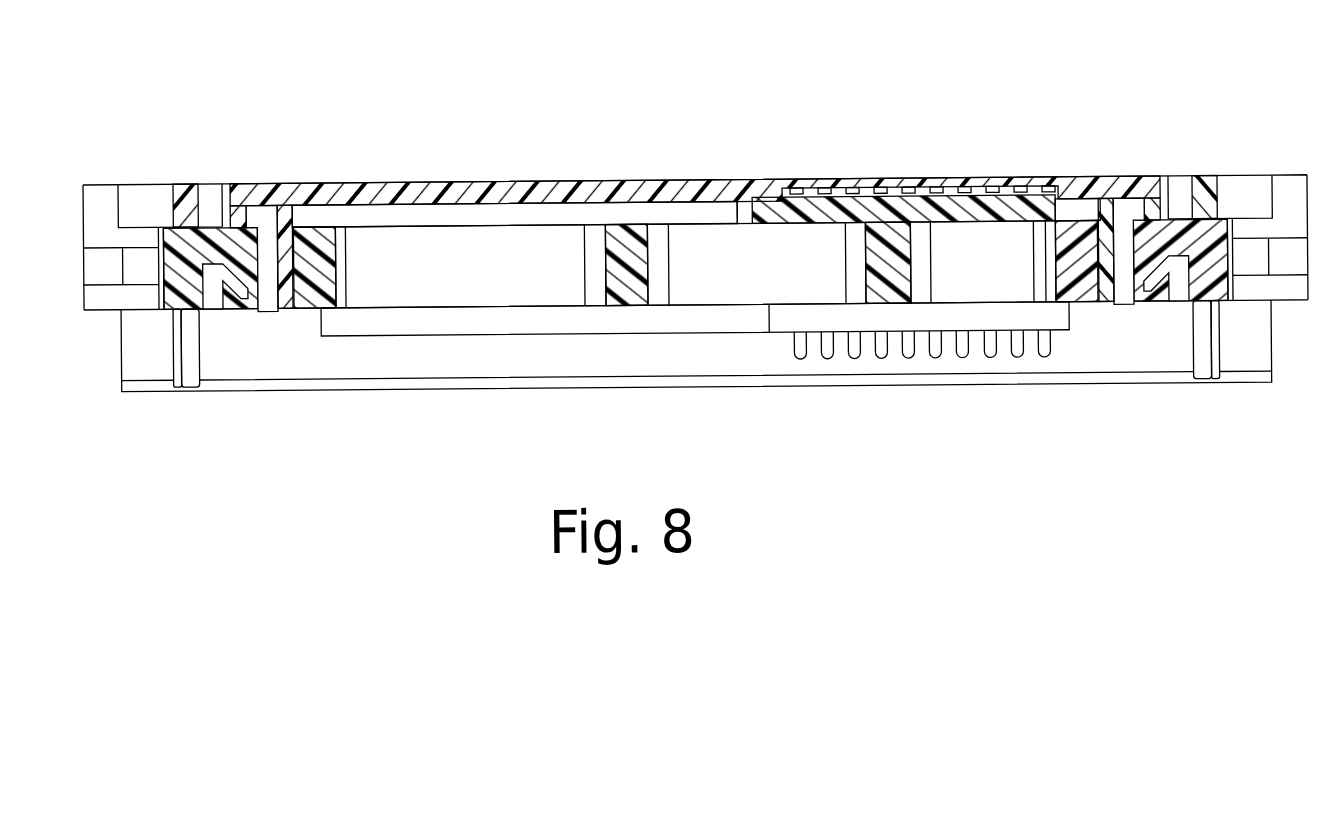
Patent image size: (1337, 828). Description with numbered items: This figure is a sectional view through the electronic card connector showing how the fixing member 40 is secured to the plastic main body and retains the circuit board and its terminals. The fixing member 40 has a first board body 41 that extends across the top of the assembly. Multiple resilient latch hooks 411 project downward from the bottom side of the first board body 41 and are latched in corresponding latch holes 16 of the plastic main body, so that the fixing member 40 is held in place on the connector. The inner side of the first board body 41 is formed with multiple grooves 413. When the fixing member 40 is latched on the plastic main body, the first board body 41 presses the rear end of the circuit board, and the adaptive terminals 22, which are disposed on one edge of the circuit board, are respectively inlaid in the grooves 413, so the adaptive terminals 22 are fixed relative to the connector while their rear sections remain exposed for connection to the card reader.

The latch hole 16 is at (228, 232).
The adaptive terminal 22 is at (823, 208).
The fixing member 40 is at (488, 184).
The first board body 41 is at (630, 190).
The resilient latch hook 411 is at (228, 289).
The groove 413 is at (818, 190).